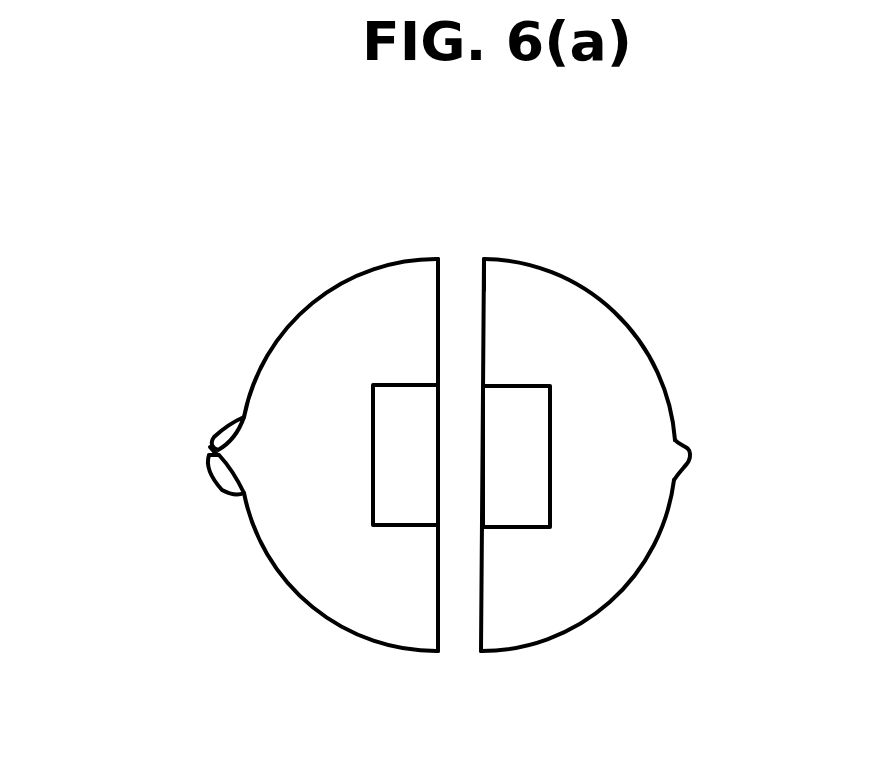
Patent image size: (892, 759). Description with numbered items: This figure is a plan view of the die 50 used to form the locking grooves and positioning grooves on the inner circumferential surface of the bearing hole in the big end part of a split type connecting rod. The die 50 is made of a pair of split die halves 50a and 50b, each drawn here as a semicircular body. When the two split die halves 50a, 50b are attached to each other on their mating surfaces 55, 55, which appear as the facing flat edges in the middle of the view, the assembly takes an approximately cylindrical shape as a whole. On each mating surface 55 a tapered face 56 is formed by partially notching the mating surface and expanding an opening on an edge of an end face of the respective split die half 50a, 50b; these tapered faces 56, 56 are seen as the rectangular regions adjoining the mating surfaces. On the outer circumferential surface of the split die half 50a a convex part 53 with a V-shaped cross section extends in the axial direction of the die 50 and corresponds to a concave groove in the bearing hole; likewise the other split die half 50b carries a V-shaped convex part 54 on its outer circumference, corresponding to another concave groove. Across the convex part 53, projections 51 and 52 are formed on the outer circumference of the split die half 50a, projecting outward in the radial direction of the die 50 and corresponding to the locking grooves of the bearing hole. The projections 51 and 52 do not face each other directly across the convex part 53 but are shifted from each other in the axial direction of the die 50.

The die 50 is at (446, 417).
The split die half 50a is at (310, 350).
The split die half 50b is at (630, 380).
The projection 51 is at (218, 482).
The projection 52 is at (225, 427).
The convex part 53 is at (213, 438).
The convex part 54 is at (690, 446).
The mating surface 55 is at (480, 290).
The tapered face 56 is at (397, 475).